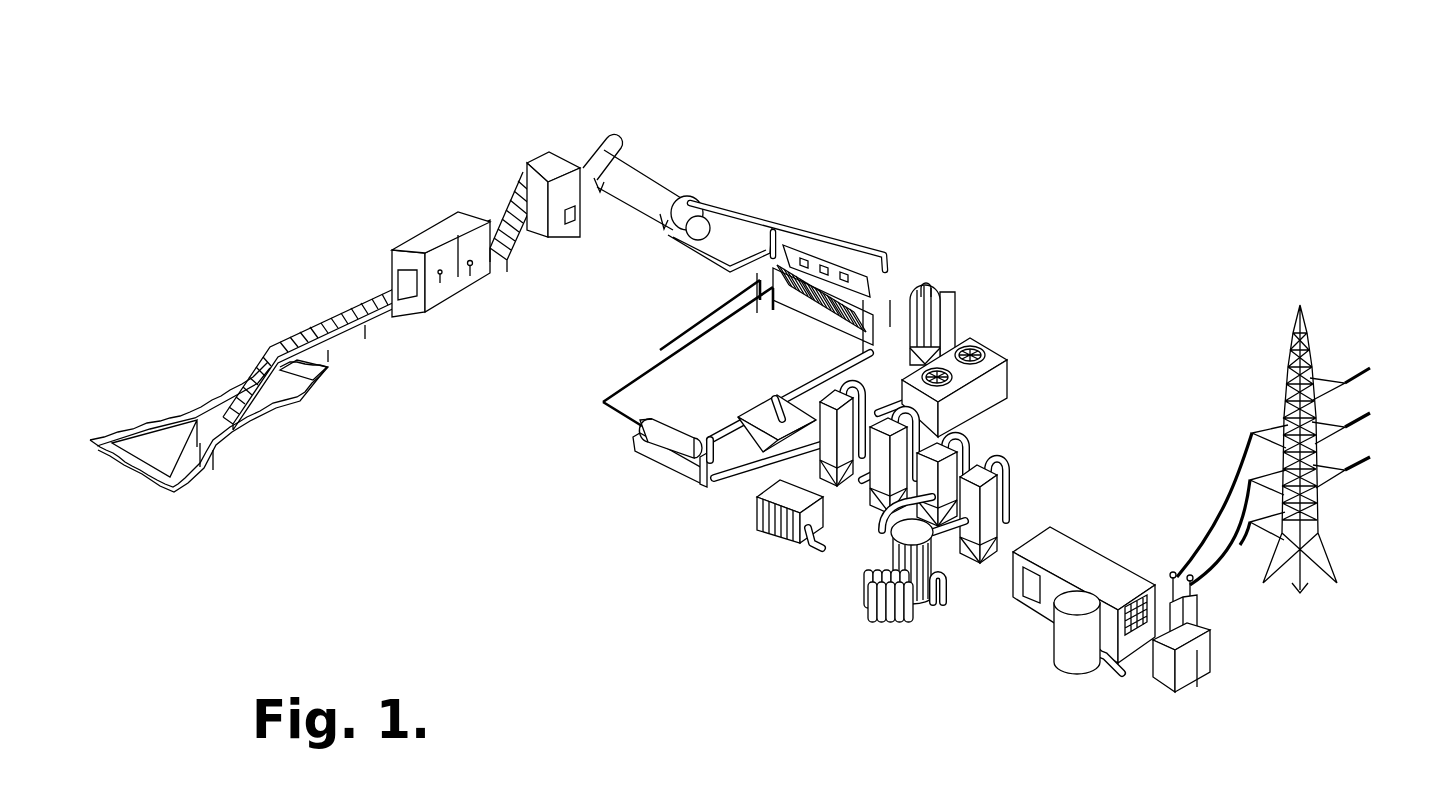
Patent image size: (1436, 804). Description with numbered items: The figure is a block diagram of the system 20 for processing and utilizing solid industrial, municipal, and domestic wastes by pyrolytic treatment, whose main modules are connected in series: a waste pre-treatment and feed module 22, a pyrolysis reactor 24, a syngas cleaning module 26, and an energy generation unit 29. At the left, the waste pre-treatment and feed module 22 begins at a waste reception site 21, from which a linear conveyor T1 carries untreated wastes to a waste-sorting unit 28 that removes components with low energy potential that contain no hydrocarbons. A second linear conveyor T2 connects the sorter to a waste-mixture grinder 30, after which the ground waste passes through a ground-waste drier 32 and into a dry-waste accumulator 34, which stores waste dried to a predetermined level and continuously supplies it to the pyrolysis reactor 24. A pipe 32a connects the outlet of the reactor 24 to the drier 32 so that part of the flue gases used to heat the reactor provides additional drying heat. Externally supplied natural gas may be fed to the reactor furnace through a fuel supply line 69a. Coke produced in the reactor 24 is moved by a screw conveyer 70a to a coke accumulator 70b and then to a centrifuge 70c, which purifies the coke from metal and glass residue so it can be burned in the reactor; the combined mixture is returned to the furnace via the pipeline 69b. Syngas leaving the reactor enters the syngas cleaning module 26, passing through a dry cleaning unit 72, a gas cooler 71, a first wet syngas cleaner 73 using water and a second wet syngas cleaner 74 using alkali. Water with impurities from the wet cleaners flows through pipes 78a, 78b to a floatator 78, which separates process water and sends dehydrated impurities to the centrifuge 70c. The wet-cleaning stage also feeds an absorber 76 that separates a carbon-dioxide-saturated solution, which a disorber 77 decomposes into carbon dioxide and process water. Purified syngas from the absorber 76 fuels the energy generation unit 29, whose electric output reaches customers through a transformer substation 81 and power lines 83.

The system 20 is at (1030, 118).
The waste reception site 21 is at (150, 478).
The linear conveyor T1 is at (320, 320).
The waste pre-treatment and feed module 22 is at (473, 303).
The waste-sorting unit 28 is at (410, 237).
The second linear conveyor T2 is at (490, 195).
The waste-mixture grinder 30 is at (541, 226).
The ground-waste drier 32 is at (630, 160).
The pipe 32a is at (733, 210).
The dry-waste accumulator 34 is at (713, 235).
The pyrolysis reactor 24 is at (849, 276).
The fuel supply line 69a is at (730, 307).
The pipeline 69b is at (603, 402).
The screw conveyer 70a is at (875, 358).
The coke accumulator 70b is at (778, 414).
The centrifuge 70c is at (652, 445).
The syngas cleaning module 26 is at (1098, 340).
The gas cooler 71 is at (990, 358).
The dry cleaning unit 72 is at (945, 302).
The first wet syngas cleaner 73 is at (850, 438).
The second wet syngas cleaner 74 is at (893, 437).
The absorber 76 is at (990, 523).
The disorber 77 is at (922, 567).
The floatator 78 is at (797, 527).
The pipe 78a is at (770, 416).
The pipe 78b is at (860, 480).
The energy generation unit 29 is at (1128, 548).
The transformer substation 81 is at (1220, 690).
The power lines 83 is at (1237, 440).